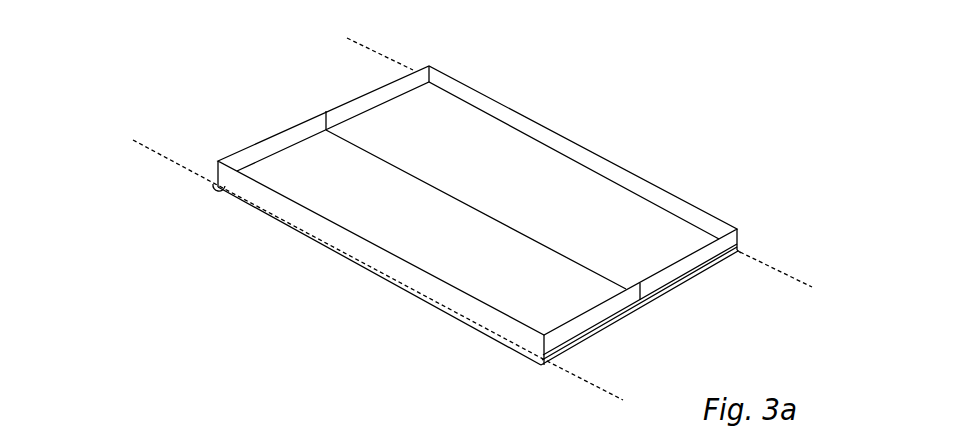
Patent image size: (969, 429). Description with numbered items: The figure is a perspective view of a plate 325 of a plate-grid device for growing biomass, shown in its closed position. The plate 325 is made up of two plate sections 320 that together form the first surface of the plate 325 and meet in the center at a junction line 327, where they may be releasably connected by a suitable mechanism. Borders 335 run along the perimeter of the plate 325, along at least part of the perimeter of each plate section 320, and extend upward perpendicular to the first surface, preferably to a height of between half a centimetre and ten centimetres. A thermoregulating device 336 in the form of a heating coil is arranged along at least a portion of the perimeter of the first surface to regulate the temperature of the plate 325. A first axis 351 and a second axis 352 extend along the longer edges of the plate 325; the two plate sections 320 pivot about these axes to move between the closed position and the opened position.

The plate sections 320 is at (412, 138).
The plate 325 is at (672, 130).
The junction line 327 is at (482, 210).
The borders 335 is at (252, 188).
The thermoregulating device 336 is at (318, 245).
The first axis 351 is at (356, 260).
The second axis 352 is at (562, 150).